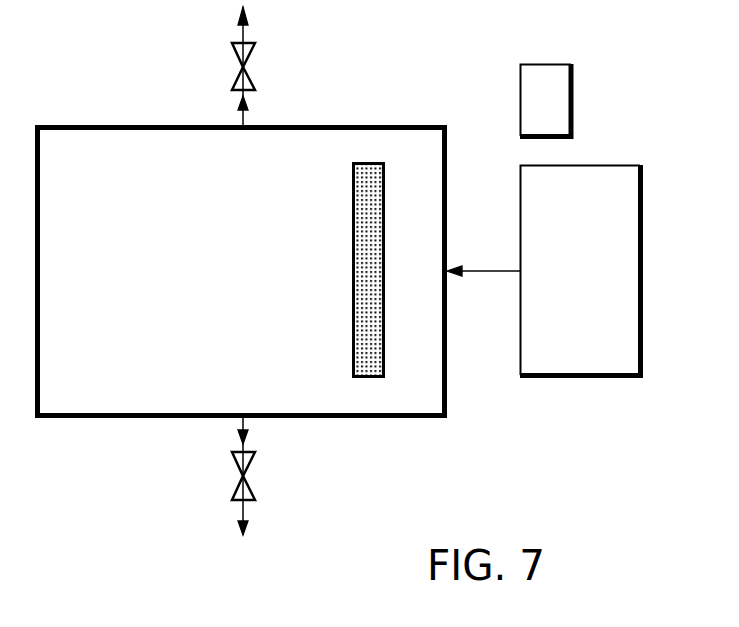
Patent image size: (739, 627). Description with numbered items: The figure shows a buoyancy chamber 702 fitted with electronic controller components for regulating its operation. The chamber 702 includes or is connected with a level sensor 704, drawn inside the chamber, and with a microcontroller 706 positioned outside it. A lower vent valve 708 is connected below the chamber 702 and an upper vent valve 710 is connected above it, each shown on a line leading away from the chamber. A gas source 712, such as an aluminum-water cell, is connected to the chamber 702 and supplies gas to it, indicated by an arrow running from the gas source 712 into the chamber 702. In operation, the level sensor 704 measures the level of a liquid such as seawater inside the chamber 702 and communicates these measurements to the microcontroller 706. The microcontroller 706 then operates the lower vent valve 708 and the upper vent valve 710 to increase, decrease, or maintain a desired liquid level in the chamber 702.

The chamber 702 is at (112, 180).
The level sensor 704 is at (365, 162).
The microcontroller 706 is at (574, 97).
The lower vent valve 708 is at (252, 483).
The upper vent valve 710 is at (252, 73).
The gas source 712 is at (600, 282).